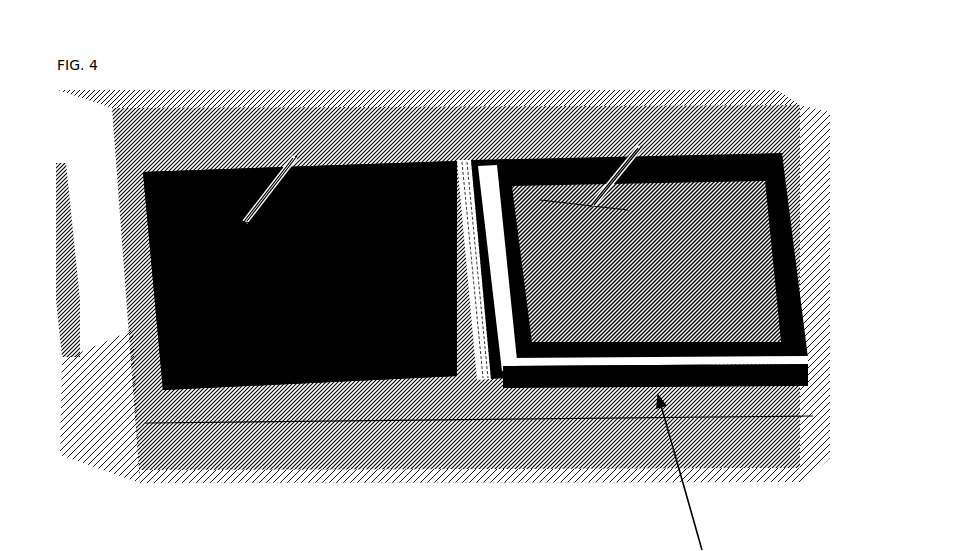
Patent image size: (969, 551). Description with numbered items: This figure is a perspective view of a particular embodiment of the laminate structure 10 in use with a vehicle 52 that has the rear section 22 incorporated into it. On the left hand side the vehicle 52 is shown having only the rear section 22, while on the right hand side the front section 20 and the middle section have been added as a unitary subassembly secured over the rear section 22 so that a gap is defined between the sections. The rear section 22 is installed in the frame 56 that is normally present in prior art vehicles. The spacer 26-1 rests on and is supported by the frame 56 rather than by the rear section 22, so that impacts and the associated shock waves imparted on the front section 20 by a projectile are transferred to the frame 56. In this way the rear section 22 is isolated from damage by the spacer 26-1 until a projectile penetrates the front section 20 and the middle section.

The laminate structure 10 is at (796, 160).
The vehicle 52 is at (479, 128).
The rear section 22 is at (196, 271).
The front section 20 is at (751, 268).
The frame 56 is at (267, 373).
The spacer 26-1 is at (507, 346).